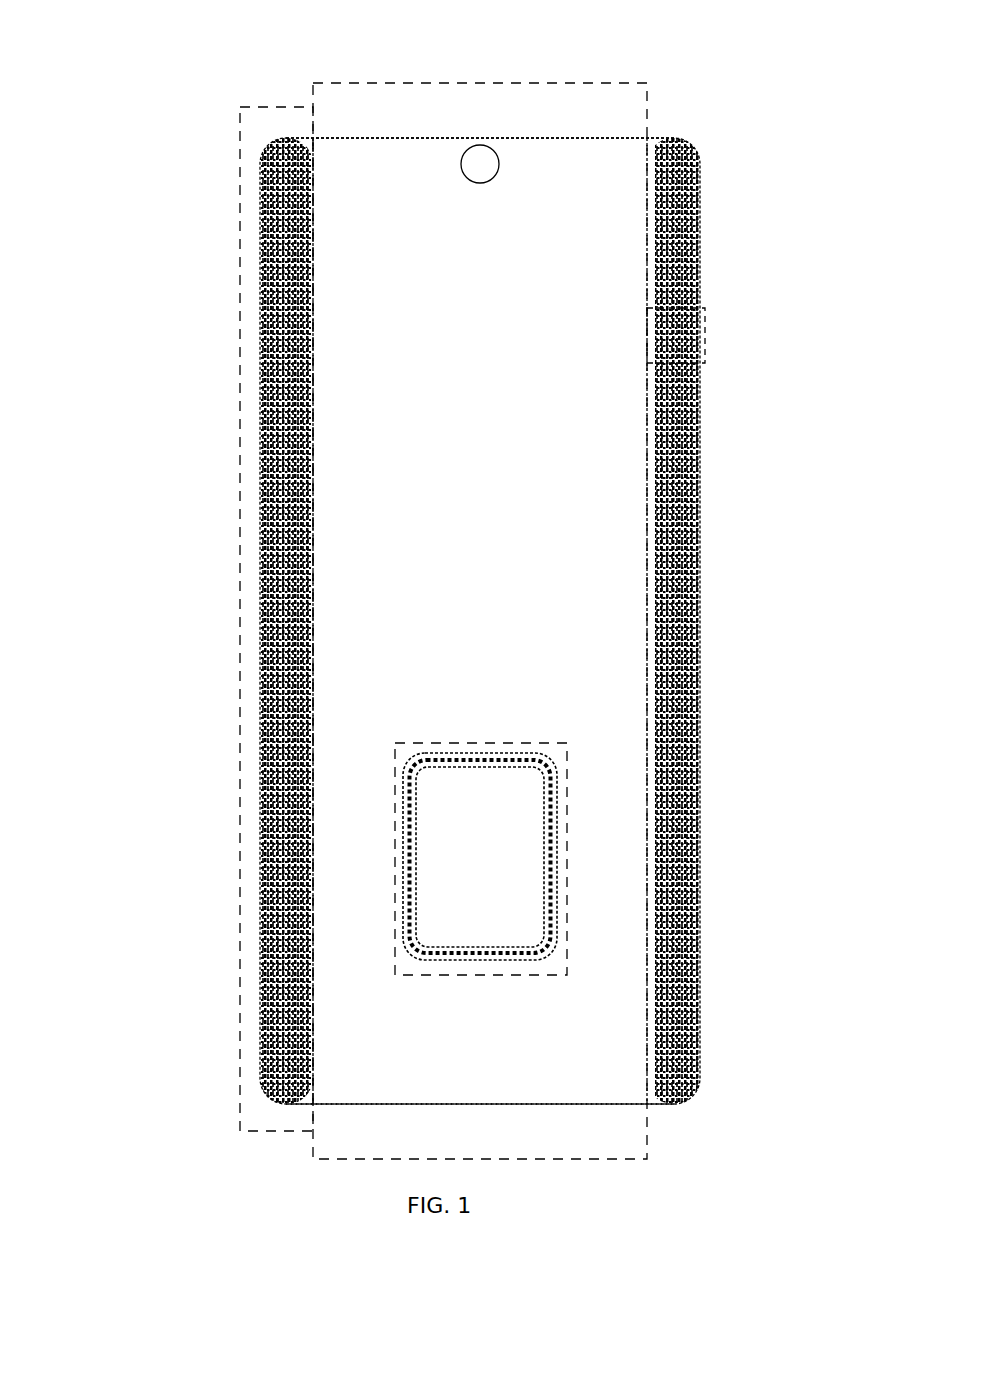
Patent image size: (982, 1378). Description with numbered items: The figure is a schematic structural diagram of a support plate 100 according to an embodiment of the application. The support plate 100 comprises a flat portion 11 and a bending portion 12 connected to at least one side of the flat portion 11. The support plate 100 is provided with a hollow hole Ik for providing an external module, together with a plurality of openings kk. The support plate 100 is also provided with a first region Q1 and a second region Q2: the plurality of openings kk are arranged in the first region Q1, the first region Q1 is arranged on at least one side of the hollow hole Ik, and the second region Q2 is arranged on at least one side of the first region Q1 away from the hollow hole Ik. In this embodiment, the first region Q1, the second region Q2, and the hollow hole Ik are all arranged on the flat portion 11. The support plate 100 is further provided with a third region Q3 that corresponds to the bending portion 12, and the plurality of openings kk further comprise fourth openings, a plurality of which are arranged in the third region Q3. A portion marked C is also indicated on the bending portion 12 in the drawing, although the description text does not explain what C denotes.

The support plate 100 is at (183, 200).
The flat portion 11 is at (622, 486).
The bending portion 12 is at (683, 215).
The cross-section region C is at (705, 308).
The first region Q1 is at (567, 788).
The second region Q2 is at (455, 78).
The third region Q3 is at (240, 428).
The openings kk is at (245, 640).
The hollow hole Ik is at (536, 880).